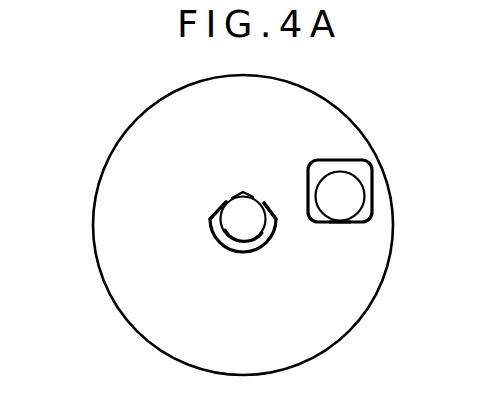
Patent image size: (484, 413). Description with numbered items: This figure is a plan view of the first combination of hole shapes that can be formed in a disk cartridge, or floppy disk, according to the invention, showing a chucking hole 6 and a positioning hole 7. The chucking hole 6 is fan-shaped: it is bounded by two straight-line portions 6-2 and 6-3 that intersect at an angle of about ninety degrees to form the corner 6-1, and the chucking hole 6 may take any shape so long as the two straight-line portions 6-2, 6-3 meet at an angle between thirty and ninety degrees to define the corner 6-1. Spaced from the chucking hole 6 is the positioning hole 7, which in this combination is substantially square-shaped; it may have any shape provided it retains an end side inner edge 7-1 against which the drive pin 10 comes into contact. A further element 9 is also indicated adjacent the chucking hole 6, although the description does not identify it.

The chucking hole 6 is at (214, 252).
The corner 6-1 is at (240, 193).
The straight-line portion 6-2 is at (222, 208).
The straight-line portion 6-3 is at (263, 207).
The positioning hole 7 is at (373, 192).
The end side inner edge 7-1 is at (351, 221).
The shaft 9 is at (227, 258).
The drive pin 10 is at (352, 185).